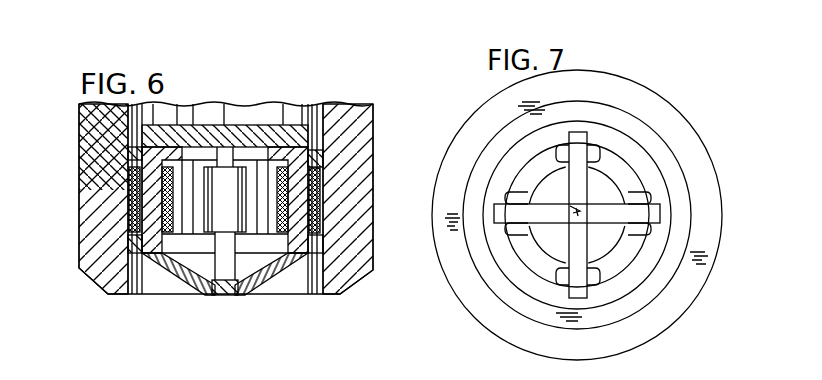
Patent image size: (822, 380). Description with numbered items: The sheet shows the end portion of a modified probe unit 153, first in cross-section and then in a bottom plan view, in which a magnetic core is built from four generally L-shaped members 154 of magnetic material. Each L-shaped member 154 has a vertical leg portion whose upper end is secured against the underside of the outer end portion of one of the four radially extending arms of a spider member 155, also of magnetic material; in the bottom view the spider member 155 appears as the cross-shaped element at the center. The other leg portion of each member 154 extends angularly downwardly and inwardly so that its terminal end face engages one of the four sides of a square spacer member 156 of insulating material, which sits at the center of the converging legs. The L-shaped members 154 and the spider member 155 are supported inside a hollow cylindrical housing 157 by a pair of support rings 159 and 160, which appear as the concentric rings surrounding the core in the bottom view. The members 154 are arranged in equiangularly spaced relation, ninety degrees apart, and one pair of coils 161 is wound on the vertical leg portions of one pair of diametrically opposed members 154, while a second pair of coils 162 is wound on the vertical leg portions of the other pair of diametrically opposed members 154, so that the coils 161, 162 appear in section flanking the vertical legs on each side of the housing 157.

In FIG. 6, the modified probe unit 153 is at (374, 120).
In FIG. 7, the modified probe unit 153 is at (484, 99).
In FIG. 6, the L-shaped members 154 is at (132, 156).
In FIG. 7, the L-shaped members 154 is at (583, 165).
In FIG. 6, the spider member 155 is at (240, 135).
In FIG. 7, the spider member 155 is at (574, 206).
In FIG. 6, the square spacer member 156 is at (222, 293).
In FIG. 7, the square spacer member 156 is at (580, 223).
In FIG. 6, the hollow cylindrical housing 157 is at (360, 144).
In FIG. 7, the hollow cylindrical housing 157 is at (700, 156).
In FIG. 6, the support ring 159 is at (130, 124).
In FIG. 7, the support ring 159 is at (547, 297).
In FIG. 6, the support ring 160 is at (132, 240).
In FIG. 7, the support ring 160 is at (502, 287).
In FIG. 6, the coils 161 is at (135, 192).
In FIG. 7, the coils 161 is at (523, 213).
In FIG. 7, the coils 162 is at (590, 146).